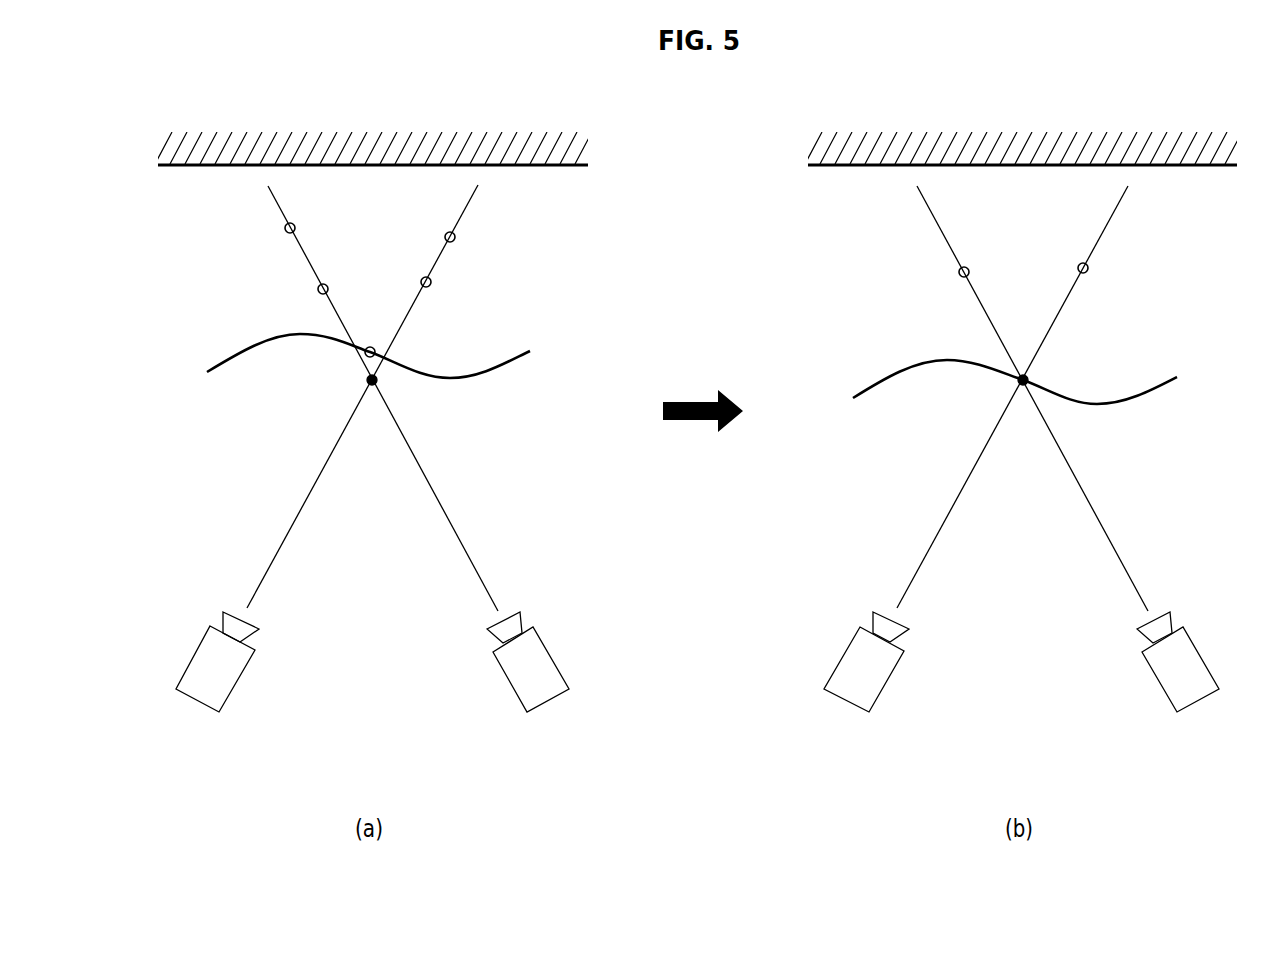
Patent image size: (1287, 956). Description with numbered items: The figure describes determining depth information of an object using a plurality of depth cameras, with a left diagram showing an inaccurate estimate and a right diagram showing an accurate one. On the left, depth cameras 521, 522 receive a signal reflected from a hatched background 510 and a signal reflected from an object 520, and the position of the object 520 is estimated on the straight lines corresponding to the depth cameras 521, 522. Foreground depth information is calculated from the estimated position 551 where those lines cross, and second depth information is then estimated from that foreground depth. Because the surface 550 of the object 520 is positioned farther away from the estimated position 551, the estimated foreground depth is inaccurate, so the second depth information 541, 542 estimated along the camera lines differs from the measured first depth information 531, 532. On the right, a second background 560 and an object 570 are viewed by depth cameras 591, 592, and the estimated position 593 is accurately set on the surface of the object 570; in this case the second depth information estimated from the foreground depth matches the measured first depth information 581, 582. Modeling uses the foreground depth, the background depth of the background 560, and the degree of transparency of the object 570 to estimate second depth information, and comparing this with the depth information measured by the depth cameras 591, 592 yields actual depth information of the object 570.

The background 510 is at (376, 148).
The object 520 is at (503, 368).
The depth camera 521 is at (548, 705).
The depth camera 522 is at (197, 703).
The measured first depth information 531 is at (285, 228).
The measured first depth information 532 is at (455, 237).
The second depth information 541 is at (318, 289).
The second depth information 542 is at (431, 282).
The surface of the object 550 is at (370, 347).
The estimated position of the object 551 is at (367, 380).
The background 560 is at (1028, 148).
The object 570 is at (1155, 389).
The measured first depth information 581 is at (959, 272).
The measured first depth information 582 is at (1088, 268).
The depth camera 591 is at (1198, 705).
The depth camera 592 is at (847, 703).
The estimated position 593 is at (1028, 379).